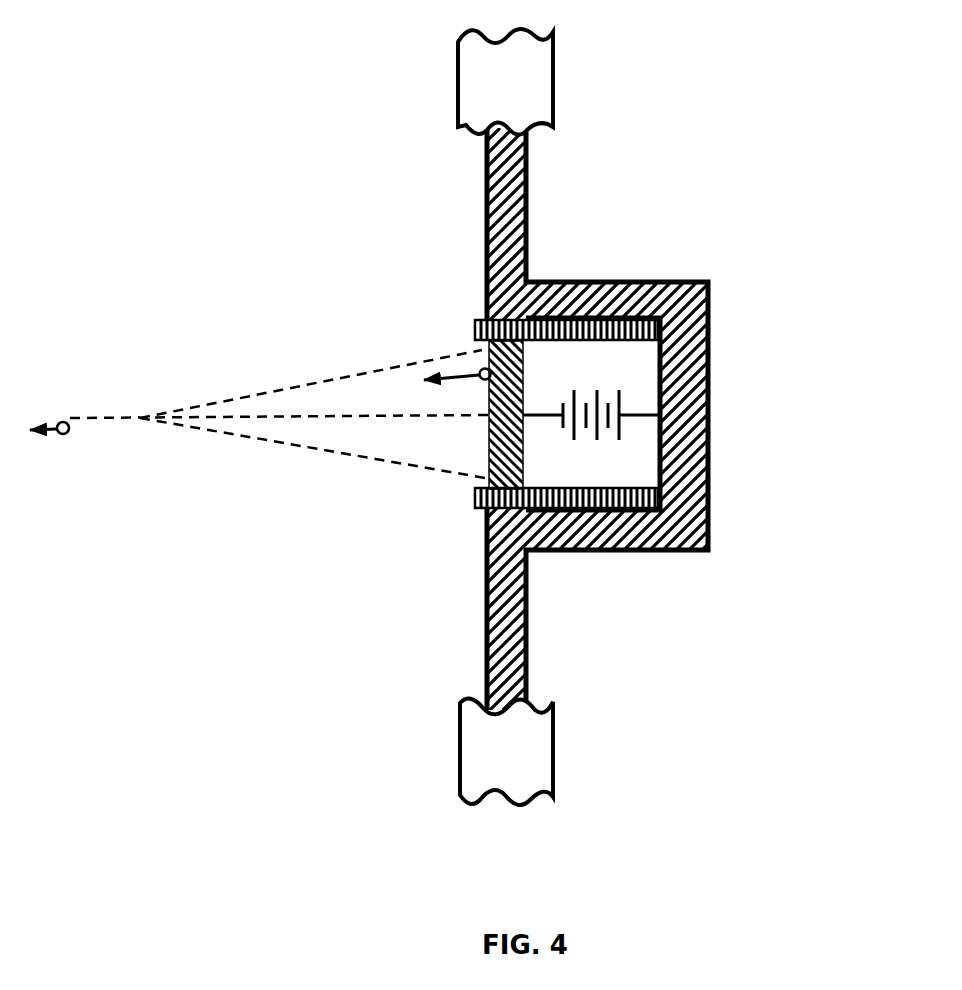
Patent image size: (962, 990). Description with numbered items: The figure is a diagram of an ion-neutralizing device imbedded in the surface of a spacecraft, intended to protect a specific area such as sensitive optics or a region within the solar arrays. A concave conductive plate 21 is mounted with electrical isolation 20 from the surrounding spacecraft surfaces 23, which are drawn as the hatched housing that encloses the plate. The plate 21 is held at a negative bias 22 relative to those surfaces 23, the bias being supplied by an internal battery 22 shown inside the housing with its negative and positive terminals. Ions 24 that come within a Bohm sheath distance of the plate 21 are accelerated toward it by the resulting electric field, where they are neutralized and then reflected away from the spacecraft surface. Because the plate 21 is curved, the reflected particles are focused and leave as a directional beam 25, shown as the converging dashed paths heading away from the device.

The first grid electrode 20 is at (474, 318).
The second electrode 21 is at (488, 453).
The voltage source 22 is at (635, 433).
The housing 23 is at (712, 304).
The electron 24 is at (472, 361).
The charged particle 25 is at (72, 442).